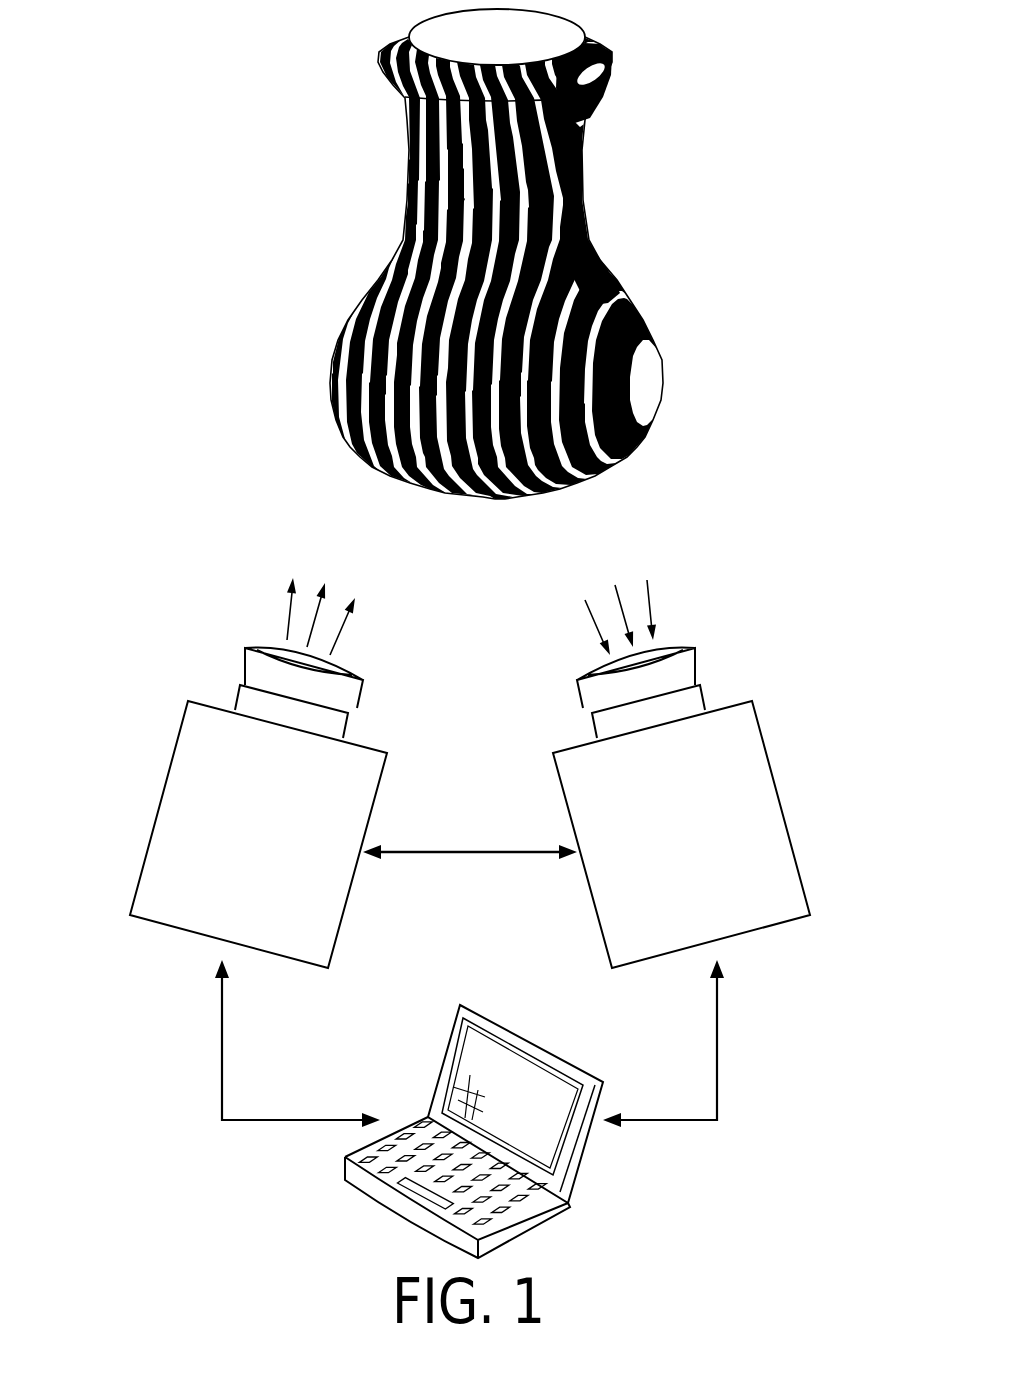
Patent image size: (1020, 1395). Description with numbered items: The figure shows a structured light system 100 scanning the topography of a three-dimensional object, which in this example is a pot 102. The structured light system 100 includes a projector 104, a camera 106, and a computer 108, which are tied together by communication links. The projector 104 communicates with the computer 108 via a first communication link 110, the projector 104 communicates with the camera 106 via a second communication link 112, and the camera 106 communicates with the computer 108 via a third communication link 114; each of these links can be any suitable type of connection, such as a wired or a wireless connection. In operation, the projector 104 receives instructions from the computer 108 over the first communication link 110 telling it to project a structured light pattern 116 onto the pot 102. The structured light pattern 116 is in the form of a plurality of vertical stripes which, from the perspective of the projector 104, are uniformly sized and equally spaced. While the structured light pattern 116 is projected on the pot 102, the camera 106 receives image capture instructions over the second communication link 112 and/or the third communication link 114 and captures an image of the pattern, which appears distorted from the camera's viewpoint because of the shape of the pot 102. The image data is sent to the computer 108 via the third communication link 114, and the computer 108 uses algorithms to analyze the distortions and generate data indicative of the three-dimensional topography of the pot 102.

The structured light system 100 is at (113, 558).
The pot 102 is at (312, 115).
The projector 104 is at (158, 872).
The camera 106 is at (622, 922).
The computer 108 is at (362, 1185).
The first communication link 110 is at (222, 1057).
The second communication link 112 is at (475, 850).
The third communication link 114 is at (717, 1032).
The structured light pattern 116 is at (603, 270).